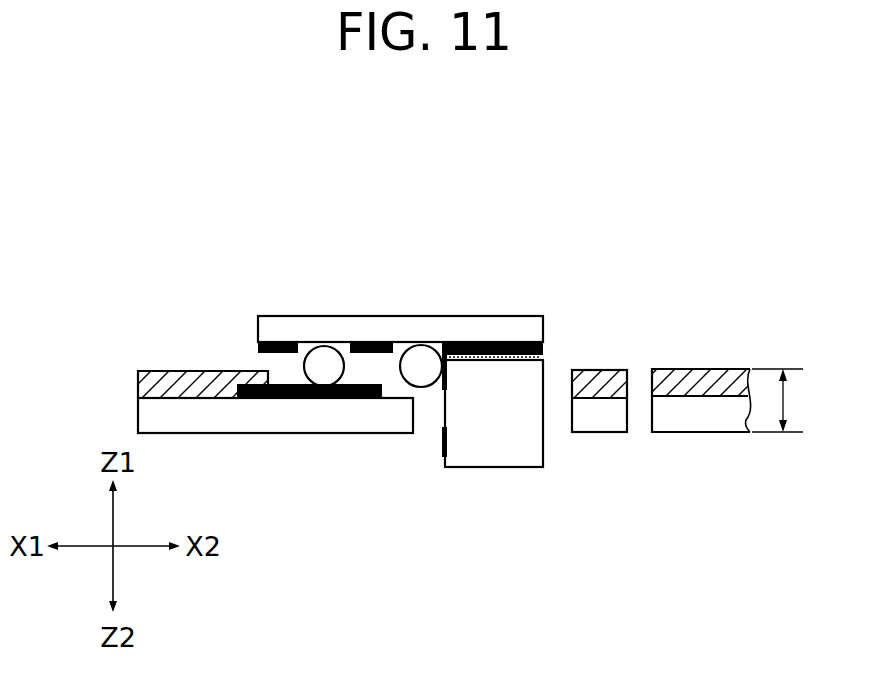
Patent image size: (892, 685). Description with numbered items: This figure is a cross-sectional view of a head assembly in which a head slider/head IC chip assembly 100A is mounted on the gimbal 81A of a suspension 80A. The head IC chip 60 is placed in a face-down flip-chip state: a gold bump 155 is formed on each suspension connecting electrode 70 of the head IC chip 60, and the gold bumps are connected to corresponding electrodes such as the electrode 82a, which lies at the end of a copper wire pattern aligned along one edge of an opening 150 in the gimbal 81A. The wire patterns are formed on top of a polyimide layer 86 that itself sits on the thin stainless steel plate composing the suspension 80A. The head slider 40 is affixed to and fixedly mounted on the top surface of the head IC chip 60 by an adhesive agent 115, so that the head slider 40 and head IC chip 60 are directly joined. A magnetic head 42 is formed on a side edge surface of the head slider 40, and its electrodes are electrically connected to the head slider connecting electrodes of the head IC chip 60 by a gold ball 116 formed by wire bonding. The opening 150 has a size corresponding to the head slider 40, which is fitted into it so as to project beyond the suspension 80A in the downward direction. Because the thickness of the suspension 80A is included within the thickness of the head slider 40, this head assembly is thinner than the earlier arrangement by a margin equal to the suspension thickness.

The head slider/head IC chip assembly 100A is at (447, 384).
The head IC chip 60 is at (466, 316).
The suspension connecting electrode 70 is at (318, 362).
The gold ball 116 is at (415, 352).
The gold bump 155 is at (344, 346).
The head slider 40 is at (473, 444).
The magnetic head 42 is at (445, 456).
The adhesive agent 115 is at (494, 398).
The gimbal 81A is at (275, 383).
The electrode 82a is at (288, 382).
The opening 150 is at (553, 415).
The suspension 80A is at (727, 403).
The polyimide layer 86 is at (710, 368).